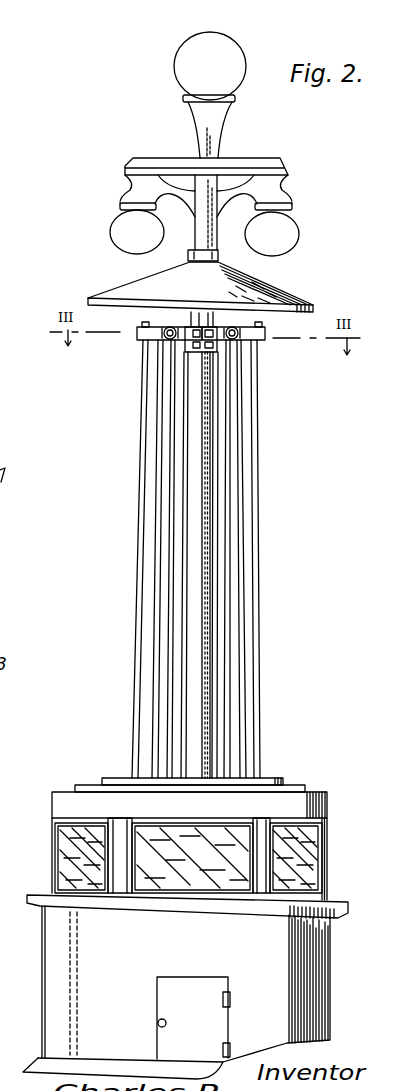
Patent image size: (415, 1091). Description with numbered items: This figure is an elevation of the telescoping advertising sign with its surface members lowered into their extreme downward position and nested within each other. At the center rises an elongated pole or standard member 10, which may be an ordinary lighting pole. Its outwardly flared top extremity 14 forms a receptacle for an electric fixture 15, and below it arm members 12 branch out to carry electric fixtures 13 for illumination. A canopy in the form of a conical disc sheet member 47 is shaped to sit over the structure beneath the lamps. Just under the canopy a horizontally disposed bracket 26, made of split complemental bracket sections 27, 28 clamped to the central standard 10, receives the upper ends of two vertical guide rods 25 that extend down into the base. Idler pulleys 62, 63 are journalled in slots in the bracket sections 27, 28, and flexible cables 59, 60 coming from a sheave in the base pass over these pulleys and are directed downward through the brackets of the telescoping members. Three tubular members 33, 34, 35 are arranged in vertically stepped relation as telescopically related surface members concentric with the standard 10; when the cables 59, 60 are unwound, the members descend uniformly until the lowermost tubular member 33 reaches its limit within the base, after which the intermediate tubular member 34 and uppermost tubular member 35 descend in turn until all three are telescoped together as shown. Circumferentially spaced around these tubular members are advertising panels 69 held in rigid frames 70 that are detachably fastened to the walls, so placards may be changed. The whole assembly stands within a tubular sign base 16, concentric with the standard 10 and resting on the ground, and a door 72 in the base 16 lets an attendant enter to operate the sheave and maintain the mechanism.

The pole or standard member 10 is at (191, 566).
The arm members 12 is at (271, 192).
The electric fixtures 13 is at (290, 231).
The top extremity 14 is at (199, 125).
The electric fixture 15 is at (235, 53).
The tubular sign base 16 is at (57, 977).
The vertical guide rods 25 is at (257, 492).
The bracket 26 is at (214, 330).
The bracket section 27 is at (156, 341).
The bracket section 28 is at (248, 341).
The tubular member 33 is at (323, 817).
The tubular member 34 is at (85, 785).
The tubular member 35 is at (117, 778).
The conical disc sheet member 47 is at (268, 290).
The flexible cable 59 is at (173, 480).
The flexible cable 60 is at (225, 472).
The idler pulley 62 is at (171, 326).
The idler pulley 63 is at (238, 328).
The advertising panels 69 is at (68, 843).
The rigid frames 70 is at (68, 818).
The door 72 is at (177, 988).